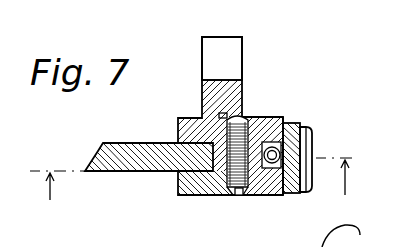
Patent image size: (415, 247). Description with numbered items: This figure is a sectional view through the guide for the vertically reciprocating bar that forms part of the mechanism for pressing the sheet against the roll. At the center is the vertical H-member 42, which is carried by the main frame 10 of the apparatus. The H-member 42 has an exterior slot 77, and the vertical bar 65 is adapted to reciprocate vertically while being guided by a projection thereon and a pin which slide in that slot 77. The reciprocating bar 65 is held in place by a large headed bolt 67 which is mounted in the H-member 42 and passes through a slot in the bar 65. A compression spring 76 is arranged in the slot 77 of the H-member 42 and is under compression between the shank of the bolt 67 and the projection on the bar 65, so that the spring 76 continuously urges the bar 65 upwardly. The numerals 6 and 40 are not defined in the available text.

The section line 6- 6 is at (191, 193).
The main frame 10 is at (238, 52).
The arm 40 is at (143, 172).
The vertical H-member 42 is at (255, 116).
The vertical bar 65 is at (297, 122).
The large headed bolt 67 is at (311, 141).
The compression spring 76 is at (275, 183).
The exterior slot 77 is at (284, 120).